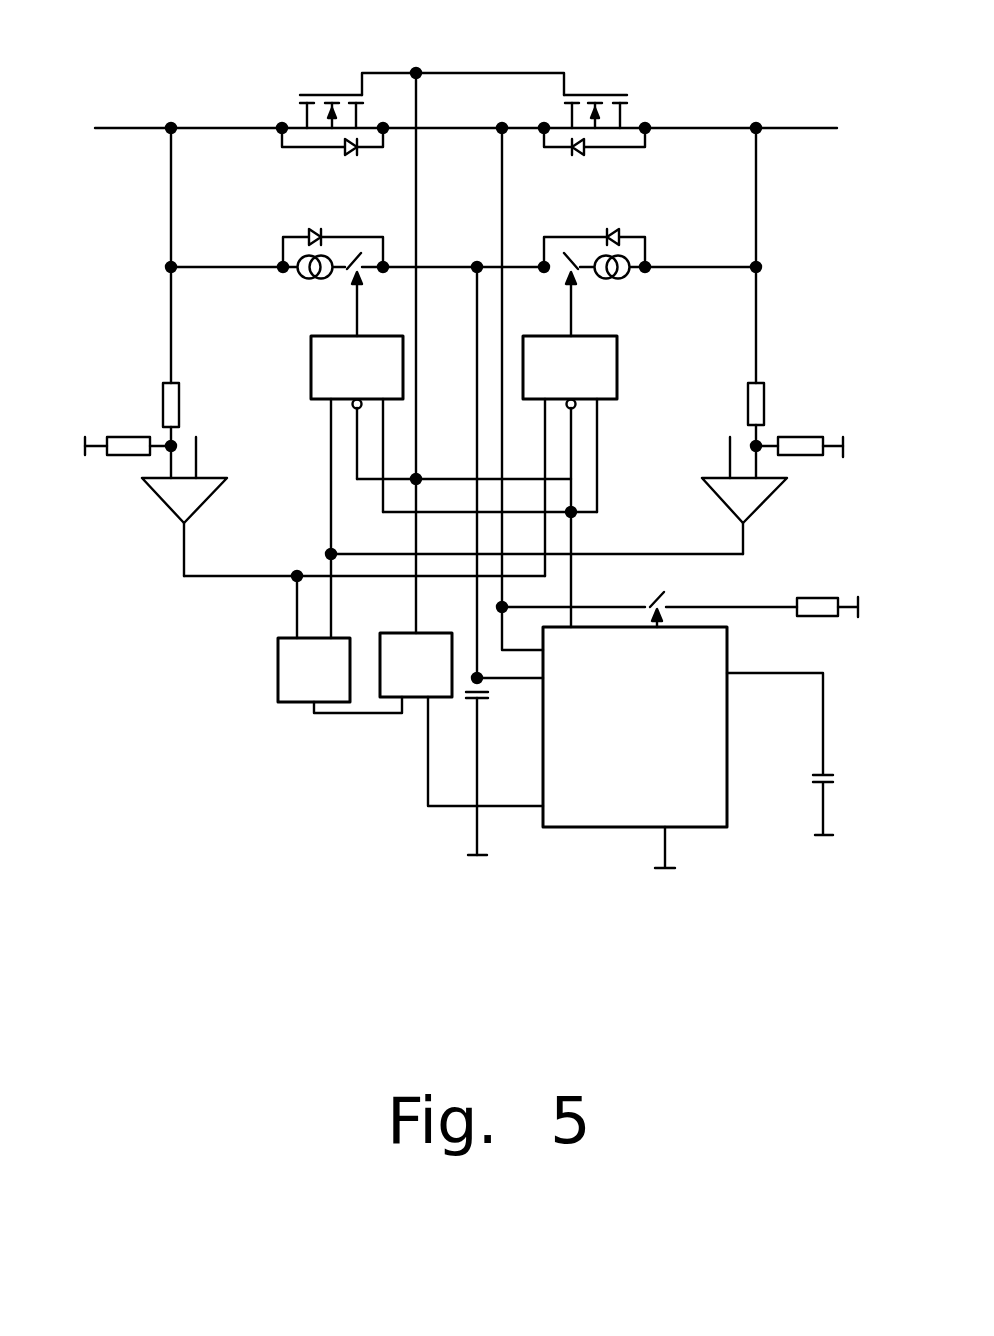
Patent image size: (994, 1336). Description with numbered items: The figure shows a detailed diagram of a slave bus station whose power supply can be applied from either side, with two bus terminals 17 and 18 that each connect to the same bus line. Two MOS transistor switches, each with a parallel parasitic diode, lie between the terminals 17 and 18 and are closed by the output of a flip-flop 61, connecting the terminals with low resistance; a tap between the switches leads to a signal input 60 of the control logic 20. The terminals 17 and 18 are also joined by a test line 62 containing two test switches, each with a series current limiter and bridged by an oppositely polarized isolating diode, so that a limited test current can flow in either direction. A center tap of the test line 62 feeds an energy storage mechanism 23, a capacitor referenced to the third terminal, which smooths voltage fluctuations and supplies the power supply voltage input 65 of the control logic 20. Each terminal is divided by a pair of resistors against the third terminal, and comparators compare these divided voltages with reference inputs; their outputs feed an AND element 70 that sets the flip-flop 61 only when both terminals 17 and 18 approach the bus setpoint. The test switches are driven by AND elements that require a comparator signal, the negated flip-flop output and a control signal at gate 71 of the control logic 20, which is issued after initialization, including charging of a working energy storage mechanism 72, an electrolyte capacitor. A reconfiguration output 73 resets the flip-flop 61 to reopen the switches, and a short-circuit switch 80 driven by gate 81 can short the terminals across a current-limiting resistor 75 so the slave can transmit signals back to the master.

The terminal 17 is at (140, 128).
The terminal 18 is at (797, 128).
The control logic 20 is at (635, 747).
The energy storage mechanism 23 is at (472, 702).
The signal input 60 is at (543, 678).
The flip-flop 61 is at (415, 700).
The test line 62 is at (452, 266).
The power supply voltage input 65 is at (543, 650).
The AND element 70 is at (290, 665).
The gate 71 is at (578, 626).
The working energy storage mechanism 72 is at (828, 770).
The reconfiguration output 73 is at (518, 808).
The current-limiting resistor 75 is at (826, 598).
The short-circuit switch 80 is at (666, 597).
The gate 81 is at (662, 628).